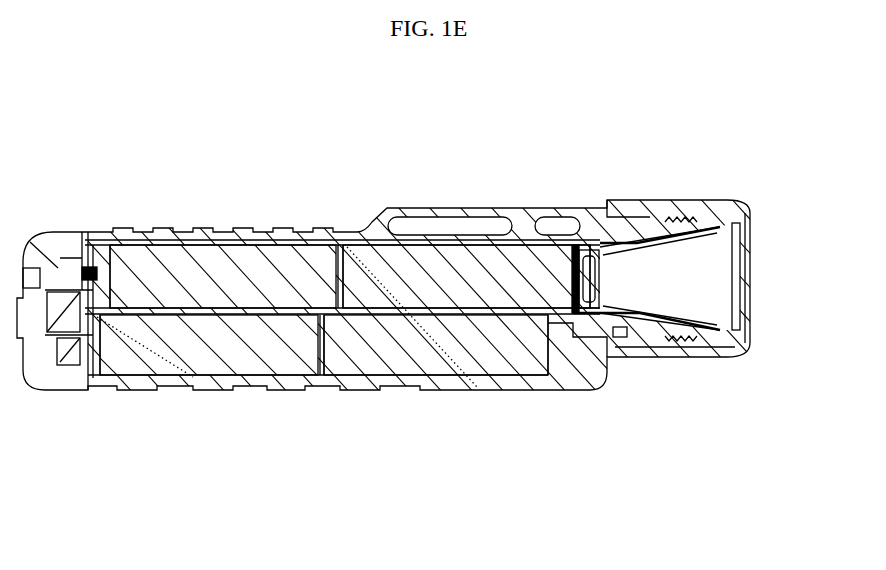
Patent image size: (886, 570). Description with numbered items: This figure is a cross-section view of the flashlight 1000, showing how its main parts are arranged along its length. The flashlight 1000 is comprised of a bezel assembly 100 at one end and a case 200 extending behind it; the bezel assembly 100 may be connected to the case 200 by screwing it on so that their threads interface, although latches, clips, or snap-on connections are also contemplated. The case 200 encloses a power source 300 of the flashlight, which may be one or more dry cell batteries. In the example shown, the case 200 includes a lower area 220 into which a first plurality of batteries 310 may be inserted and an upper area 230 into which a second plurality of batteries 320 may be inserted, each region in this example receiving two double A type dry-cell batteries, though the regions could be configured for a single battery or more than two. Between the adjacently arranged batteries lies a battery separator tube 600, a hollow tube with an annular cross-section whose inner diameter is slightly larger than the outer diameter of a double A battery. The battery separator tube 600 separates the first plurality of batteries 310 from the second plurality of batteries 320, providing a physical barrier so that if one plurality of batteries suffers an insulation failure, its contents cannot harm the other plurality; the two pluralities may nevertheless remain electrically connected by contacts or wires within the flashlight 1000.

The flashlight 1000 is at (282, 177).
The bezel assembly 100 is at (735, 380).
The case 200 is at (495, 392).
The lower area 220 is at (337, 410).
The upper area 230 is at (242, 212).
The power source 300 is at (270, 417).
The first plurality of batteries 310 is at (533, 367).
The second plurality of batteries 320 is at (452, 262).
The battery separator tube 600 is at (312, 245).